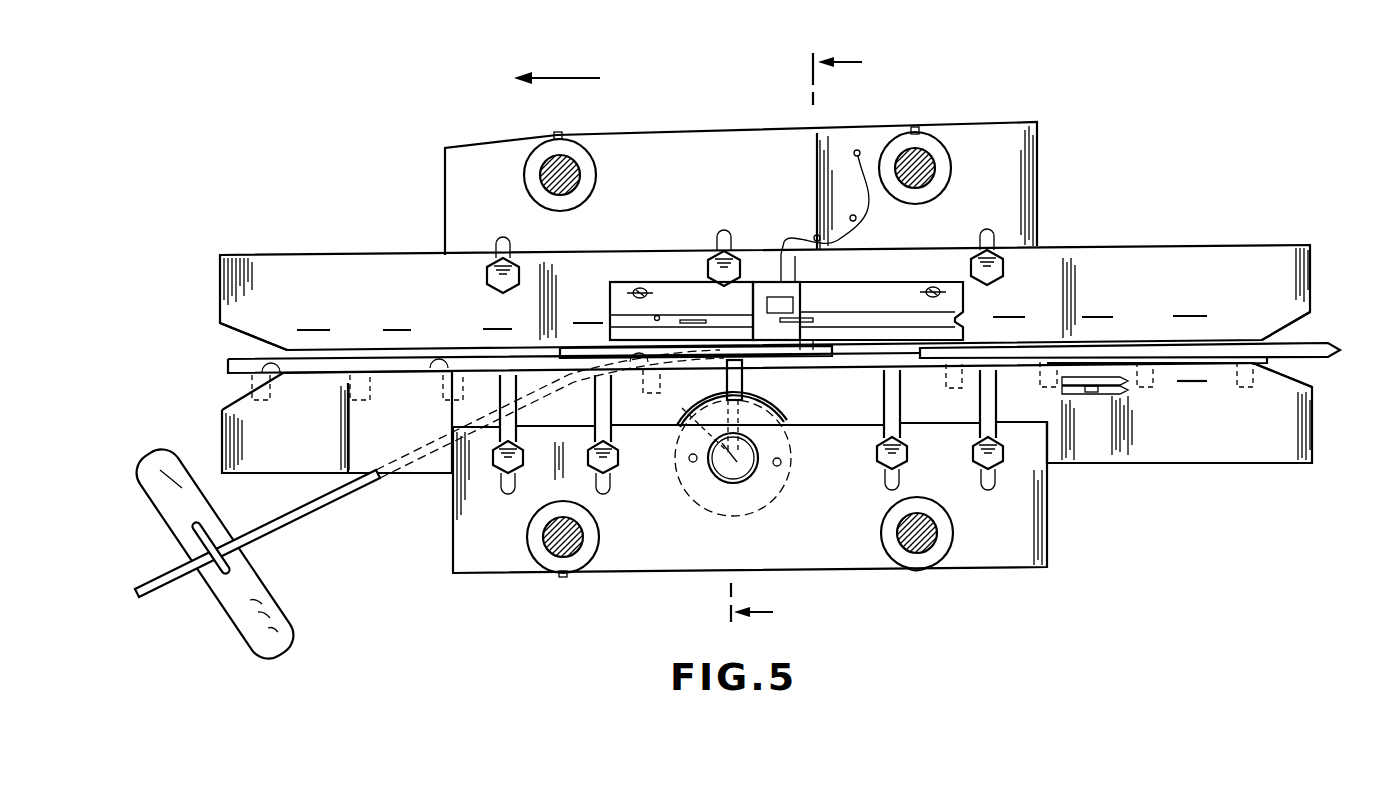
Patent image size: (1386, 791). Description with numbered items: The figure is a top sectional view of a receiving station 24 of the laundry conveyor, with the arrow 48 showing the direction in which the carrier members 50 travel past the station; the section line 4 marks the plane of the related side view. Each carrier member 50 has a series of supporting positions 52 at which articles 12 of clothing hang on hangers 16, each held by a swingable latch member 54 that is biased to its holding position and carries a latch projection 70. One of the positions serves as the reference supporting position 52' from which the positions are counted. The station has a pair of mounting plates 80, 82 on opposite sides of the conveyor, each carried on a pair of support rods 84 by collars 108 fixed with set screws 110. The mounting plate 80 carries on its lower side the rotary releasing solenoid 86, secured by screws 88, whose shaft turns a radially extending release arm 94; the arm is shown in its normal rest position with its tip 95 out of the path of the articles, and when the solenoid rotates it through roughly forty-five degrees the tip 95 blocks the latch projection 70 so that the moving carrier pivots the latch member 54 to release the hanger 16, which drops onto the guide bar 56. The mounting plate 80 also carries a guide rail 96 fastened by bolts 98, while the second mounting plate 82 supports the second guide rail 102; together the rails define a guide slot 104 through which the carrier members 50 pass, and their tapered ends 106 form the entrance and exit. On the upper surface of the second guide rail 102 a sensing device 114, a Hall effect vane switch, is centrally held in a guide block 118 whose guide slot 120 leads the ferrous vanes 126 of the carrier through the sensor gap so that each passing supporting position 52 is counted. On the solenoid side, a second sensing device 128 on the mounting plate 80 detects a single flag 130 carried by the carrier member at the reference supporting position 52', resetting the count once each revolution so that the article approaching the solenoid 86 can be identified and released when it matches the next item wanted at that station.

The section line 4- 4 is at (808, 332).
The identifiable article 12 is at (262, 588).
The hanger 16 is at (206, 525).
The receiving station 24 is at (1053, 482).
The arrow 48 is at (562, 80).
The carrier member 50 is at (228, 365).
The supporting position 52 is at (735, 337).
The reference supporting position 52' is at (996, 332).
The swingable latch member 54 is at (262, 398).
The guide bar 56 is at (347, 492).
The latch projection 70 is at (521, 394).
The mounting plate 80 is at (788, 553).
The second mounting plate 82 is at (1038, 153).
The support rod 84 is at (580, 168).
The rotary releasing solenoid 86 is at (737, 506).
The screw 88 is at (690, 463).
The release arm 94 is at (675, 448).
The tip of release arm 95 is at (684, 410).
The guide rail 96 is at (1200, 443).
The bolt 98 is at (502, 478).
The second guide rail 102 is at (1183, 258).
The guide slot 104 is at (1280, 346).
The tapered end 106 is at (232, 334).
The collar 108 is at (744, 338).
The set screw 110 is at (560, 132).
The sensing device 114 is at (798, 309).
The guide block 118 is at (850, 296).
The guide slot 120 is at (658, 317).
The vane 126 is at (325, 327).
The second sensing device 128 is at (1096, 392).
The flag 130 is at (1186, 385).